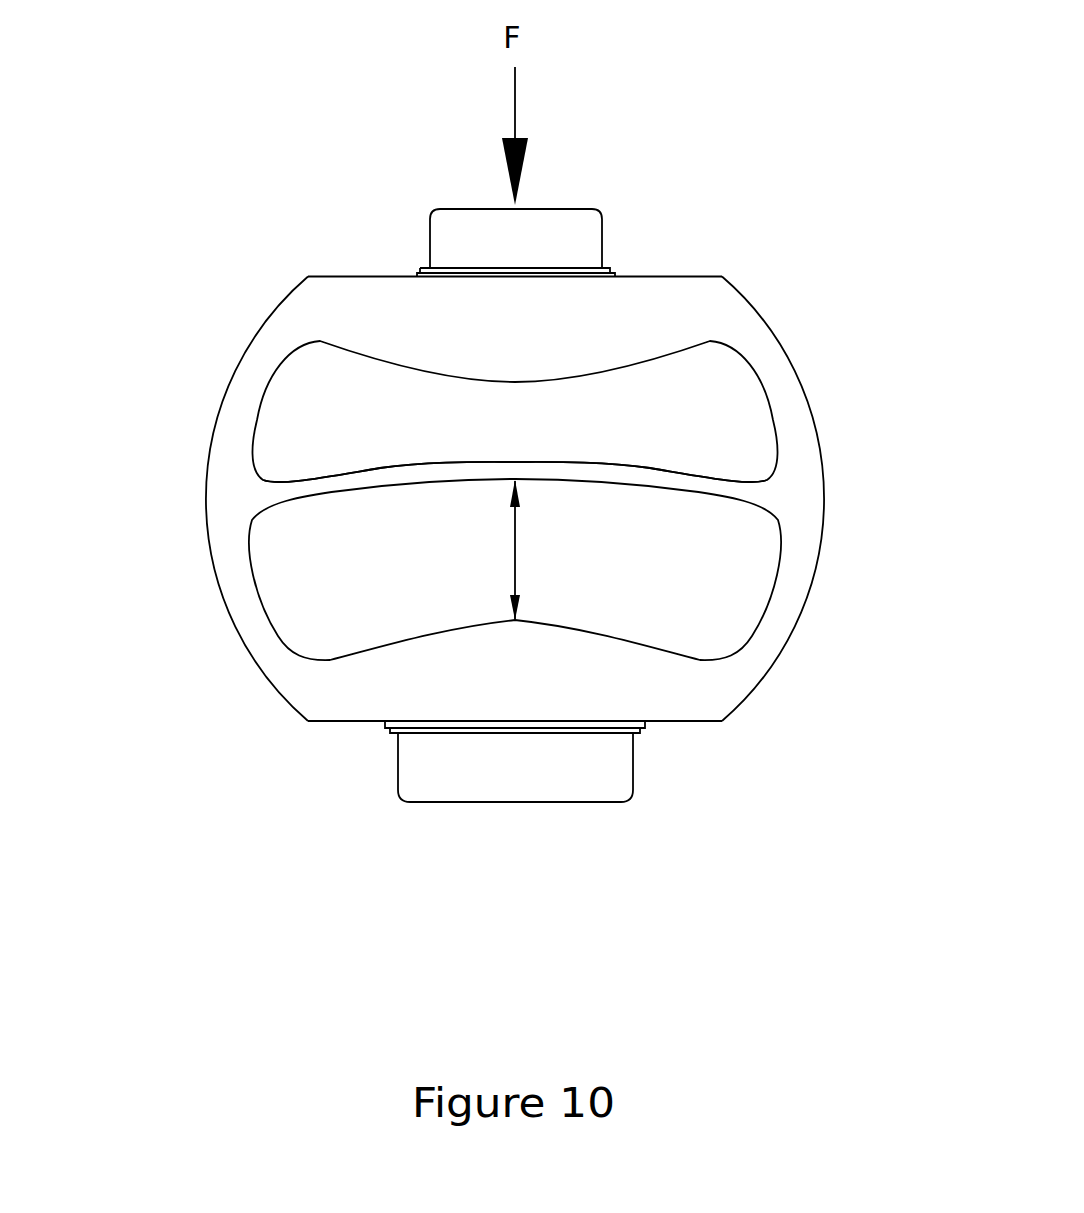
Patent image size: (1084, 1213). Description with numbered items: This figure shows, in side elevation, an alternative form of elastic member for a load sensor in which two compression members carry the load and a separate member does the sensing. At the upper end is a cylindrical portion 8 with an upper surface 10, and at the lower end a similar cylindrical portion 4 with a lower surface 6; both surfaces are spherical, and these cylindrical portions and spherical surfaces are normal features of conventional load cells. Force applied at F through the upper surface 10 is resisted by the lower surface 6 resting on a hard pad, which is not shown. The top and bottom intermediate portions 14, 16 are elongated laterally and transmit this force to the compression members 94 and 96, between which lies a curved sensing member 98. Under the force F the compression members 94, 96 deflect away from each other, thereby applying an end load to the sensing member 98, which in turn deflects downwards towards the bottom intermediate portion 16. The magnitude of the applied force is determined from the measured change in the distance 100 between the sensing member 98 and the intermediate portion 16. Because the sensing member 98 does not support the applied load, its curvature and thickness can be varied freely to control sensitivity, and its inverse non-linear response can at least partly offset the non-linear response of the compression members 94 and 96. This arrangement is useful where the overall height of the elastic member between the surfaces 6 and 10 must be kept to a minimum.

The cylindrical portion 4 is at (637, 767).
The lower surface 6 is at (447, 807).
The cylindrical portion 8 is at (605, 239).
The upper surface 10 is at (568, 203).
The top intermediate portion 14 is at (514, 393).
The bottom intermediate portion 16 is at (515, 588).
The compression member 94 is at (215, 423).
The compression member 96 is at (815, 423).
The curved sensing member 98 is at (660, 463).
The distance 100 is at (546, 550).